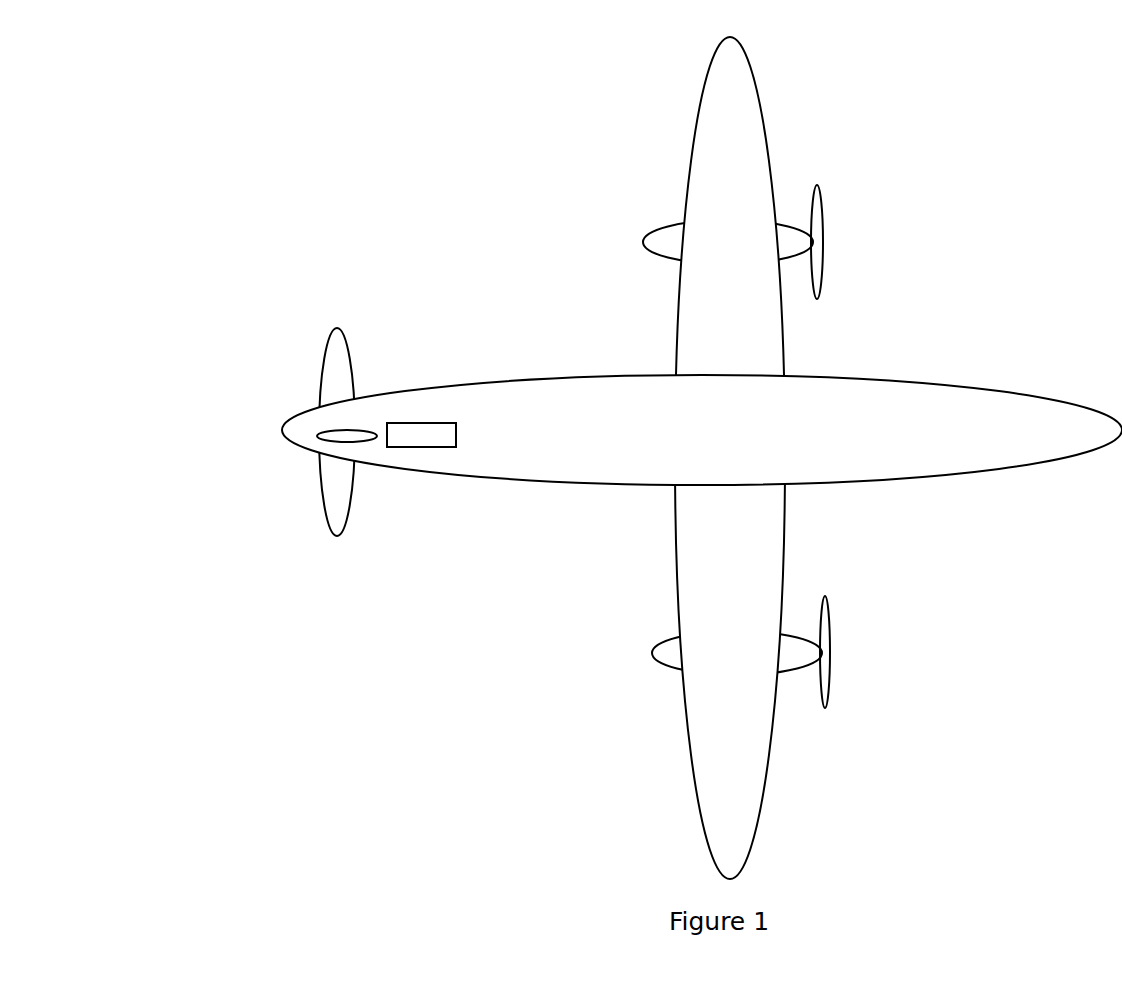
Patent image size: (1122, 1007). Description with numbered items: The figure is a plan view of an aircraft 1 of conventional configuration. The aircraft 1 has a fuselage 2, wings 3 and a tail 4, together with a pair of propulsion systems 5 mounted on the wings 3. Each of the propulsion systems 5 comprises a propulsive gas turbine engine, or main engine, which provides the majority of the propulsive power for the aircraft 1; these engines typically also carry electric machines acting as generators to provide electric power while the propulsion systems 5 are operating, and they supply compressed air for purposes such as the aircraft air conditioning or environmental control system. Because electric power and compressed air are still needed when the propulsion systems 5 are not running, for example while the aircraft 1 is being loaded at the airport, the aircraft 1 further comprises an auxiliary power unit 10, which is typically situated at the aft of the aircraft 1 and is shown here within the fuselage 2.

The aircraft 1 is at (601, 458).
The fuselage 2 is at (507, 375).
The wings 3 is at (672, 563).
The tail 4 is at (324, 503).
The propulsion systems 5 is at (645, 189).
The auxiliary power unit 10 is at (417, 447).